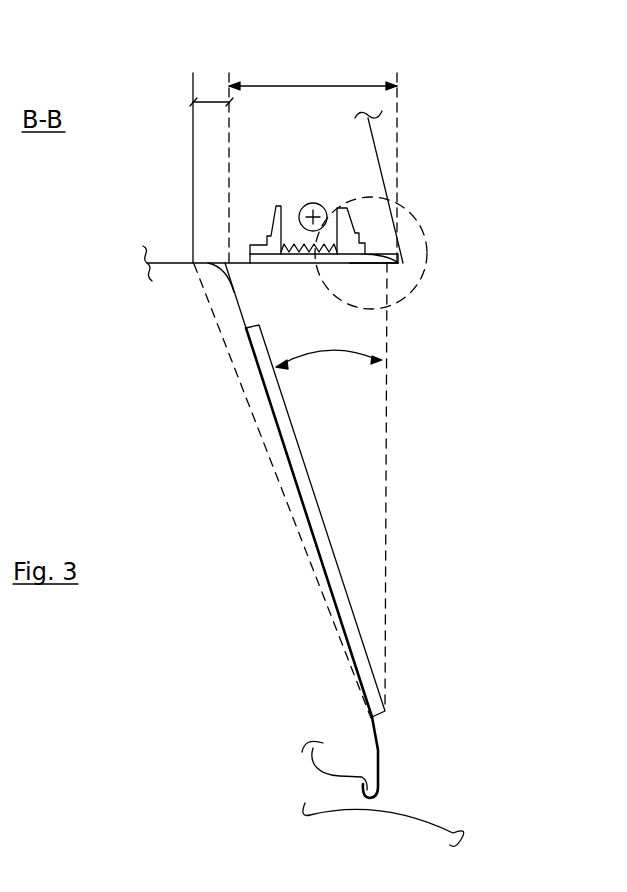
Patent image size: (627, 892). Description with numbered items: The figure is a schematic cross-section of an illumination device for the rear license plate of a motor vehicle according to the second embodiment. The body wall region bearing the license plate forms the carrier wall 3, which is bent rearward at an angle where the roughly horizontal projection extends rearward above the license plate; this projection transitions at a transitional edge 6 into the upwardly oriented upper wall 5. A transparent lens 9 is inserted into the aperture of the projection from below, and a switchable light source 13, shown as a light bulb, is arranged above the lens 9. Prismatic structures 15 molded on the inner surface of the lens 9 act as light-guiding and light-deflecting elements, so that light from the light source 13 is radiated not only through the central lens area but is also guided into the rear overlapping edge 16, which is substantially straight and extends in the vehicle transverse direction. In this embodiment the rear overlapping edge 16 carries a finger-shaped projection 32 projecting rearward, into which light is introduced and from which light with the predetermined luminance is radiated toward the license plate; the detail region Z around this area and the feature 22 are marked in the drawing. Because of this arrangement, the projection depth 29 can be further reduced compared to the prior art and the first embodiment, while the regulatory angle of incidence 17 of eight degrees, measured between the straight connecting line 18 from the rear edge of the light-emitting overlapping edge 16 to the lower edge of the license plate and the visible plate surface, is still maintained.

The carrier wall 3 is at (284, 446).
The upper wall 5 is at (396, 163).
The transitional edge 6 is at (401, 267).
The lens 9 is at (293, 262).
The light source 13 is at (312, 203).
The prismatic structures 15 is at (290, 234).
The rear overlapping edge 16 is at (365, 286).
The angle of incidence 17 is at (340, 357).
The connecting line 18 is at (385, 572).
The tooth 22 is at (380, 240).
The projection depth 29 is at (338, 86).
The finger-shaped projection 32 is at (388, 265).
The detail zone Z is at (425, 255).